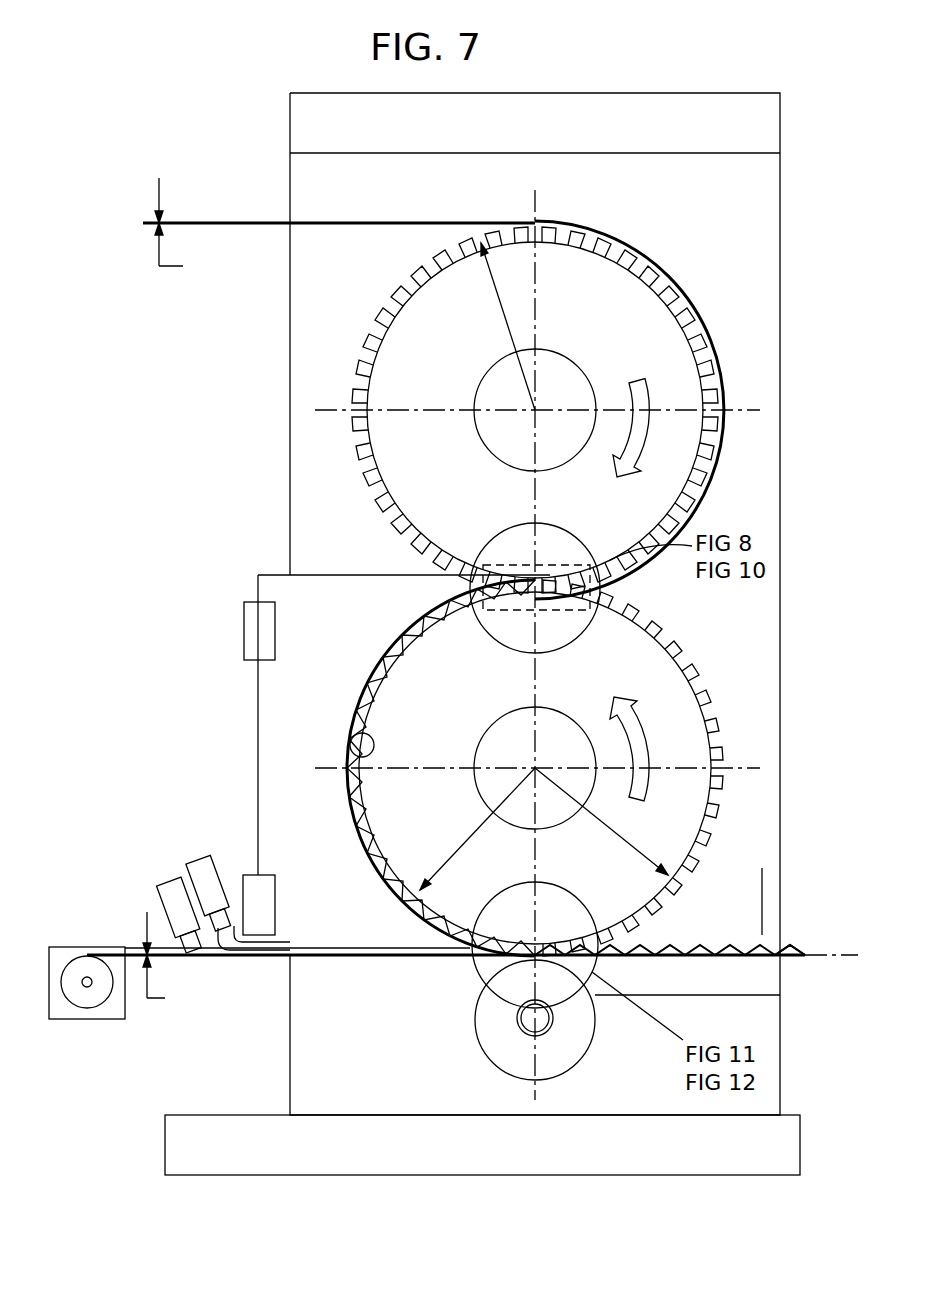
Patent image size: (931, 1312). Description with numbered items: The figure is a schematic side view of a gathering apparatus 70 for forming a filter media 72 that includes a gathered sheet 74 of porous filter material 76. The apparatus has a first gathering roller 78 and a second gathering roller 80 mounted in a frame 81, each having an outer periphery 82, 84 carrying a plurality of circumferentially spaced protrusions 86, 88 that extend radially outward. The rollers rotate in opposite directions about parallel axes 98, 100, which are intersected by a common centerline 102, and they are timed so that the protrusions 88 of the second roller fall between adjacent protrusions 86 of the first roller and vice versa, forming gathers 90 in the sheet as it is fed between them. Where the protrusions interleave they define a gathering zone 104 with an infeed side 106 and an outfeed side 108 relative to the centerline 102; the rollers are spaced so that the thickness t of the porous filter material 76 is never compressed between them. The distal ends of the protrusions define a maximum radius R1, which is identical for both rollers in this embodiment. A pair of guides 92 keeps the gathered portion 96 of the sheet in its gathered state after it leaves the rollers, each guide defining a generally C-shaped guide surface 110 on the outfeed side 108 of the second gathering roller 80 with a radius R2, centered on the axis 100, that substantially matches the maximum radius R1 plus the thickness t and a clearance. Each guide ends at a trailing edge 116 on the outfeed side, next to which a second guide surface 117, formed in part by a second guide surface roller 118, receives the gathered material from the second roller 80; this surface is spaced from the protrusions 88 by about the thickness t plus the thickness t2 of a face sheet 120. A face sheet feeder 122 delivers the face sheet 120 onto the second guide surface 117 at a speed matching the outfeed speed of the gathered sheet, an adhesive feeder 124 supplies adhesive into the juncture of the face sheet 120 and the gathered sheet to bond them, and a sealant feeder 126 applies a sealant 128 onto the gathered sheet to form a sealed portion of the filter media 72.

The gathering apparatus 70 is at (188, 386).
The filter media 72 is at (795, 938).
The gathered sheet 74 is at (800, 948).
The porous filter material 76 is at (718, 480).
The first gathering roller 78 is at (668, 348).
The second gathering roller 80 is at (678, 722).
The frame 81 is at (768, 248).
The outer periphery of first gathering roller 82 is at (373, 335).
The outer periphery of second gathering roller 84 is at (712, 690).
The protrusions of first gathering roller 86 is at (377, 325).
The protrusions of second gathering roller 88 is at (700, 645).
The gathers 90 is at (400, 645).
The guides 92 is at (283, 712).
The gathered portion 96 is at (360, 705).
The axis of first gathering roller 98 is at (535, 410).
The axis of second gathering roller 100 is at (480, 786).
The common centerline 102 is at (542, 201).
The gathering zone 104 is at (550, 590).
The infeed side 106 is at (600, 591).
The outfeed side 108 is at (428, 580).
The guide surface 110 is at (350, 748).
The trailing edge 116 is at (455, 942).
The second guide surface 117 is at (850, 958).
The second guide surface roller 118 is at (551, 1050).
The face sheet 120 is at (370, 960).
The face sheet feeder 122 is at (87, 978).
The adhesive feeder 124 is at (180, 880).
The sealant feeder 126 is at (210, 860).
The sealant 128 is at (248, 960).
The maximum radius R1 is at (495, 300).
The radius of guide surface R2 is at (460, 842).
The thickness of porous filter material t is at (176, 231).
The thickness of face sheet t2 is at (167, 964).